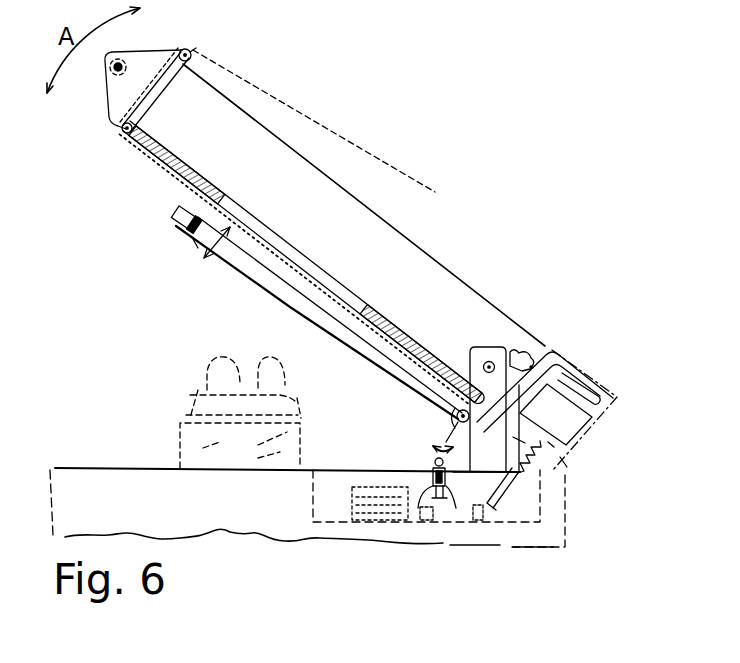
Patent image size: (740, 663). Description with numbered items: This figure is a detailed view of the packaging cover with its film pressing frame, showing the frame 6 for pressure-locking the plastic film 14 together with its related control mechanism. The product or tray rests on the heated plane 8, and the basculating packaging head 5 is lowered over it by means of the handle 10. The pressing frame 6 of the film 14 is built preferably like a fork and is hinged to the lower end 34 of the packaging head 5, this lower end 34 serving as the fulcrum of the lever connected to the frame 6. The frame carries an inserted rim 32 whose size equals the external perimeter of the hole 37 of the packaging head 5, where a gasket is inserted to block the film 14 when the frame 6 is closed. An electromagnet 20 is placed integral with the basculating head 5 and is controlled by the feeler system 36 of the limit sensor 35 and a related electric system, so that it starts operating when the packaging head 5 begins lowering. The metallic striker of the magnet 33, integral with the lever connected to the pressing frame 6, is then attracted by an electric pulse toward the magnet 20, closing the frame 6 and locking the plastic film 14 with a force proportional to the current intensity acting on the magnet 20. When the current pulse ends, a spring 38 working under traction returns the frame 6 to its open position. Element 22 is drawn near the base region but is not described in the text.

The packaging head 5 is at (302, 180).
The pressing frame 6 is at (263, 278).
The heated plane 8 is at (195, 440).
The handle 10 is at (118, 67).
The plastic film 14 is at (245, 82).
The electromagnet 20 is at (557, 418).
The base pad 22 is at (377, 495).
The rim 32 is at (185, 211).
The metallic striker of the magnet 33 is at (573, 388).
The lower end (fulcrum) 34 is at (456, 412).
The limit sensor 35 is at (443, 483).
The feeler system 36 is at (452, 440).
The hole of the packaging head 37 is at (313, 269).
The spring 38 is at (531, 367).